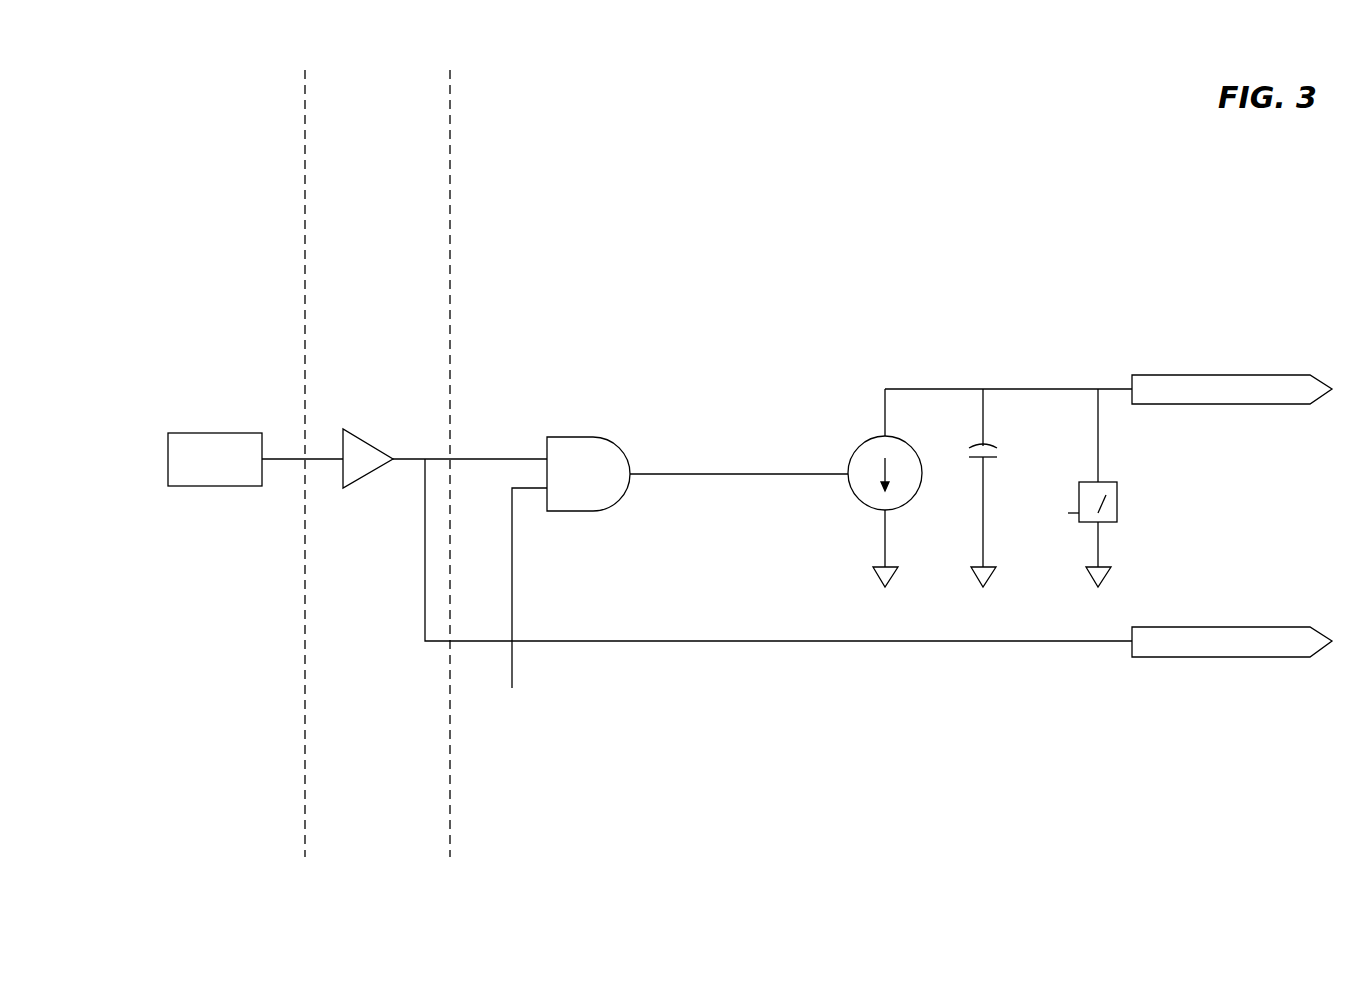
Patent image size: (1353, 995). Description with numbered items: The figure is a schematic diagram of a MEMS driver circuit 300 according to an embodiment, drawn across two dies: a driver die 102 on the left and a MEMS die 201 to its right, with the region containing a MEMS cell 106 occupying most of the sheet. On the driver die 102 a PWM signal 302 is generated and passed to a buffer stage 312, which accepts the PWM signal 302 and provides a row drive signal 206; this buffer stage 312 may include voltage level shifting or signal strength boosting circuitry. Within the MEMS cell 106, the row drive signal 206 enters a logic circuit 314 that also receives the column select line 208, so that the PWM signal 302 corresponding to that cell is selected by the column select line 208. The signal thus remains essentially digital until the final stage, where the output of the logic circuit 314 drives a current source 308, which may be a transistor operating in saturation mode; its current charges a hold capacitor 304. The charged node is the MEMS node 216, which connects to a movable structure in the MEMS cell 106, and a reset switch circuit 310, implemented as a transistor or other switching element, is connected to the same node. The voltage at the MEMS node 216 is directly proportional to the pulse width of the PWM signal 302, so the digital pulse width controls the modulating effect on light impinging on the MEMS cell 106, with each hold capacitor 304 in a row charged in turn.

The row drivers 102 is at (254, 170).
The MEMS die 201 is at (381, 170).
The MEMS cell 106 is at (760, 169).
The PWM signal 302 is at (213, 486).
The buffer stage 312 is at (394, 430).
The logic circuit 314 is at (592, 437).
The current source 308 is at (860, 446).
The hold capacitor 304 is at (1058, 488).
The reset switch circuit 310 is at (1054, 548).
The MEMS node 216 is at (1283, 406).
The row drive signal 206 is at (1220, 627).
The column select line 208 is at (529, 761).
The MEMS driver circuit 300 is at (952, 838).